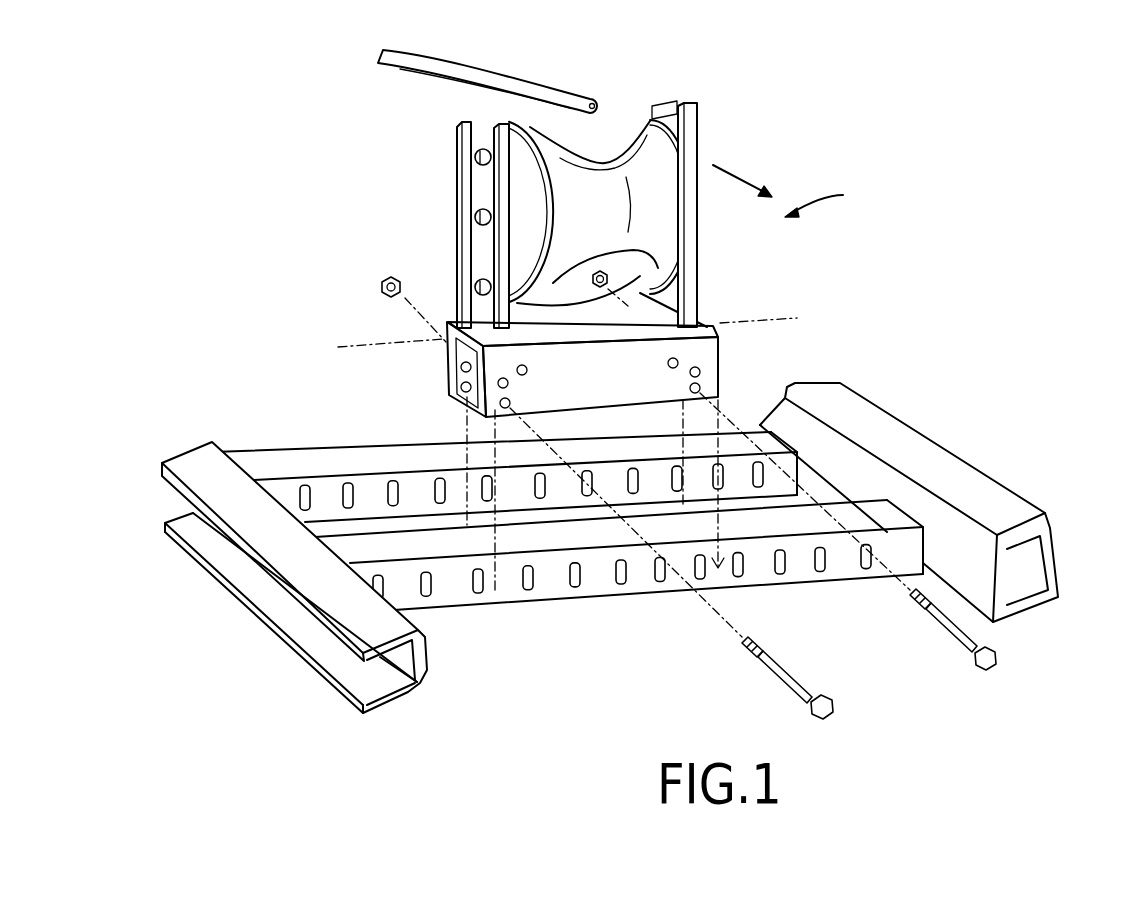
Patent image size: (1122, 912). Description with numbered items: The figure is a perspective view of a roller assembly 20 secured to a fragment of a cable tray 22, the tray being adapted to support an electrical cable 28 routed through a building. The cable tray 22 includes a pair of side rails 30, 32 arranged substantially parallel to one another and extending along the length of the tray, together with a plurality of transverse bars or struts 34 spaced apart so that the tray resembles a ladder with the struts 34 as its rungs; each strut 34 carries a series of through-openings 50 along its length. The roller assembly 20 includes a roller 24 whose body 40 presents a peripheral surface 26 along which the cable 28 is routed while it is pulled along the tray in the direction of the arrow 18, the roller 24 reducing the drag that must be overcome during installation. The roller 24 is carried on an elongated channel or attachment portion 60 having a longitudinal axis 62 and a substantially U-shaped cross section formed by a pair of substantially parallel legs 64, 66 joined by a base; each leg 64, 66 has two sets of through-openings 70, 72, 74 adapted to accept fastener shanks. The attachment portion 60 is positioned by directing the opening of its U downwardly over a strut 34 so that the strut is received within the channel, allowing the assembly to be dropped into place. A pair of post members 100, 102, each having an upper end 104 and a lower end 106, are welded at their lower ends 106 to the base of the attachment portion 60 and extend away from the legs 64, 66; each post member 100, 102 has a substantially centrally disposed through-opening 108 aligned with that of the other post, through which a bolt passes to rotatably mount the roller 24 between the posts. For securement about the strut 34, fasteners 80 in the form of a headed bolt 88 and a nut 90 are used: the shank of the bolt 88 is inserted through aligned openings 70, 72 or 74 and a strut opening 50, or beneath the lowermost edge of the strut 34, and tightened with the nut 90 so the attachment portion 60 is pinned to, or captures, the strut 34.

The arrow 18 is at (738, 175).
The roller assembly 20 is at (830, 199).
The cable tray 22 is at (947, 465).
The roller 24 is at (642, 120).
The peripheral surface 26 is at (675, 233).
The cable 28 is at (548, 82).
The side rail 30 is at (347, 700).
The side rail 32 is at (1010, 507).
The strut 34 is at (365, 447).
The body 40 is at (675, 217).
The through-openings 50 is at (527, 590).
The attachment portion 60 is at (717, 323).
The longitudinal axis 62 is at (797, 318).
The leg 64 is at (475, 409).
The leg 66 is at (447, 373).
The through-openings 70 is at (510, 403).
The through-openings 72 is at (509, 384).
The through-openings 74 is at (527, 371).
The fasteners 80 is at (1004, 657).
The headed bolt 88 is at (790, 682).
The nut 90 is at (382, 290).
The post member 100 is at (472, 140).
The post member 102 is at (700, 137).
The end 104 is at (470, 110).
The end 106 is at (473, 307).
The through-opening 108 is at (480, 213).